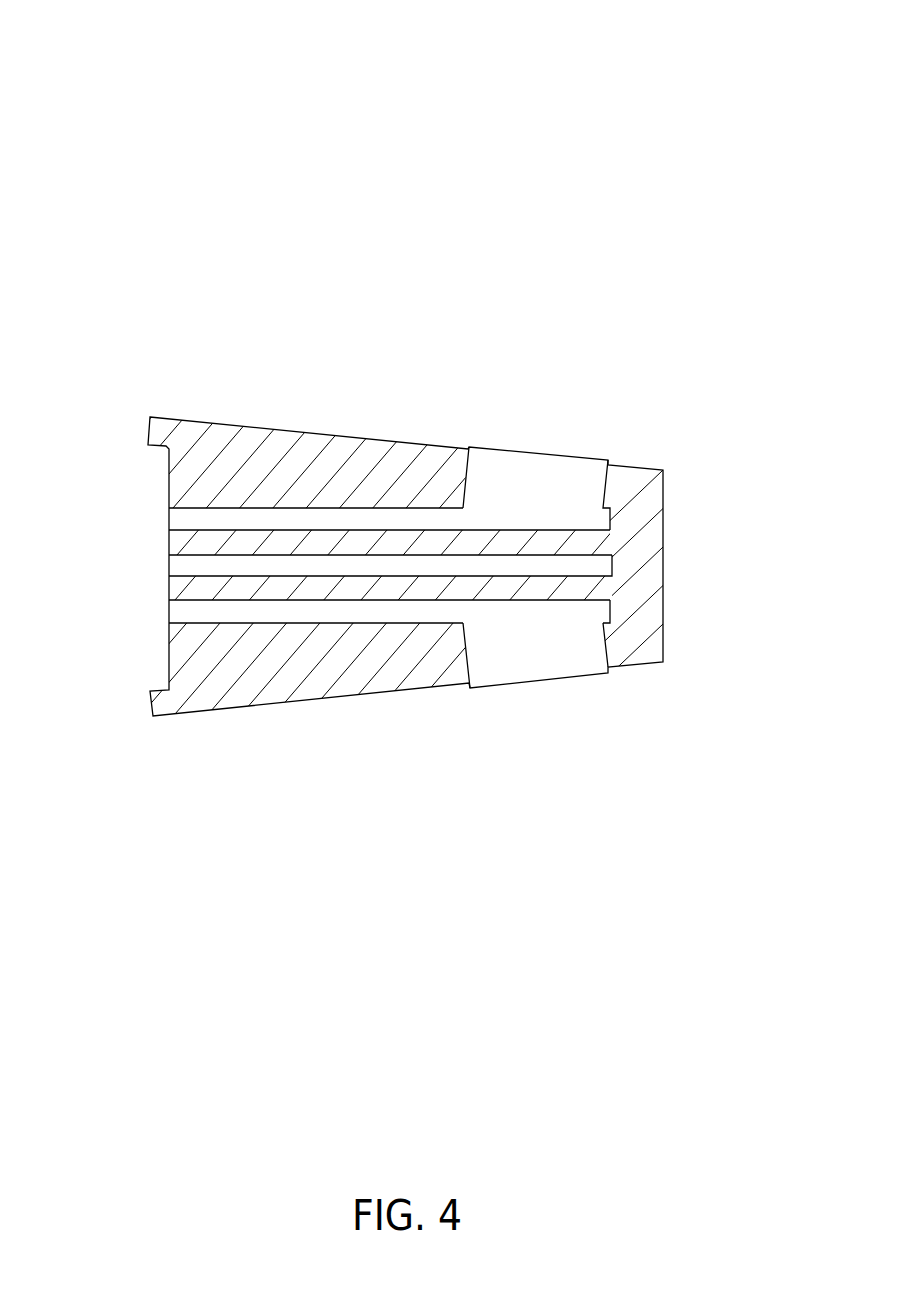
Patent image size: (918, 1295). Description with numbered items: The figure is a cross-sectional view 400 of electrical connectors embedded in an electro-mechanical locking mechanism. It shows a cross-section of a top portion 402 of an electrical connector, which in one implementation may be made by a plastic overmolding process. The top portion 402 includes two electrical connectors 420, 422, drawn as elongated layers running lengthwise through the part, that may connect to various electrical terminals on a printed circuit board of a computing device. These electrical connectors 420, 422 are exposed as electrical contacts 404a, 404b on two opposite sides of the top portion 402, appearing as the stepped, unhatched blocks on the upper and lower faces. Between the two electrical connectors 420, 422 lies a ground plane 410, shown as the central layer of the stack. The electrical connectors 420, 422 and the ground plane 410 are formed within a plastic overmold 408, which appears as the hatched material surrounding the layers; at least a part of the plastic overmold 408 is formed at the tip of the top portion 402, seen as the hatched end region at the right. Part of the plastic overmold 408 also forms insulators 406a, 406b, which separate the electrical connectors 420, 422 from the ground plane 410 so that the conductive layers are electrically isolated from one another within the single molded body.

The cross-sectional view 400 is at (122, 57).
The top portion 402 is at (731, 713).
The electrical contact 404a is at (560, 455).
The electrical contact 404b is at (560, 680).
The insulator 406a is at (168, 543).
The insulator 406b is at (168, 590).
The plastic overmold 408 is at (382, 440).
The ground plane 410 is at (168, 570).
The electrical connector 420 is at (168, 615).
The electrical connector 422 is at (168, 521).